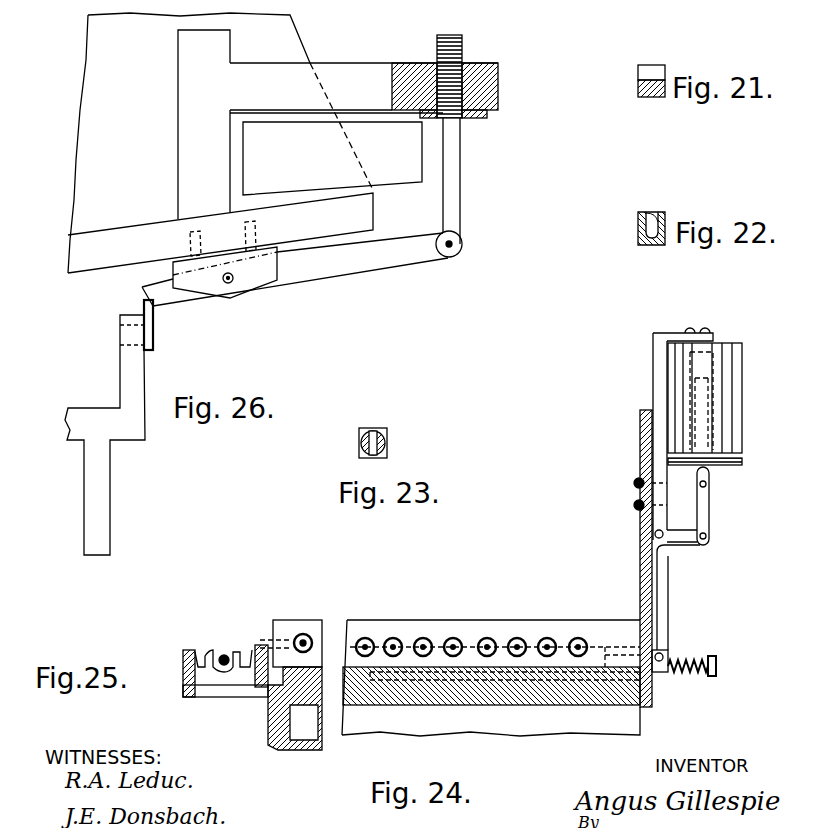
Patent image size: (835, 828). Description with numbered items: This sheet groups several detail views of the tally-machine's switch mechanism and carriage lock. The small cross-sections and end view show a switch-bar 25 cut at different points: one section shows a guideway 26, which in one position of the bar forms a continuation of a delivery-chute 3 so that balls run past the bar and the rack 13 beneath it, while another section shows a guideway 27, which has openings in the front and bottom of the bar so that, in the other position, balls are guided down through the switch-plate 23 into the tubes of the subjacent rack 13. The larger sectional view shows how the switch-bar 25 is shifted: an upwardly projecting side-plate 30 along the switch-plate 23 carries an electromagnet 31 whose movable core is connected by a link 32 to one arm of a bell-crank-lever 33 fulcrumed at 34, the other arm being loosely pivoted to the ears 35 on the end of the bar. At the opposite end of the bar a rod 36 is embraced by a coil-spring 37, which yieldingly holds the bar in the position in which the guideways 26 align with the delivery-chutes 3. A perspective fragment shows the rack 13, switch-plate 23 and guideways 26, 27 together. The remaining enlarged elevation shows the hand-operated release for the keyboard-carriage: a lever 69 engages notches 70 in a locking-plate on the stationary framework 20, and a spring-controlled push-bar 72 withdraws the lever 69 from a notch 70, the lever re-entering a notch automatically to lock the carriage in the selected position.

In FIG. 24, the delivery-chute 3 is at (424, 638).
In FIG. 24, the rack 13 is at (630, 723).
In FIG. 25, the rack 13 is at (298, 748).
In FIG. 26, the stationary framework 20 is at (110, 503).
In FIG. 26, the switch-plate 23 is at (105, 262).
In FIG. 24, the switch-plate 23 is at (425, 695).
In FIG. 25, the switch-plate 23 is at (268, 716).
In FIG. 21, the switch-bar 25 is at (653, 98).
In FIG. 22, the switch-bar 25 is at (652, 212).
In FIG. 23, the switch-bar 25 is at (388, 451).
In FIG. 21, the guideway 26 is at (650, 73).
In FIG. 25, the guideway 26 is at (243, 650).
In FIG. 22, the guideway 27 is at (640, 226).
In FIG. 25, the guideway 27 is at (232, 692).
In FIG. 26, the side-plate 30 is at (92, 60).
In FIG. 24, the side-plate 30 is at (623, 558).
In FIG. 24, the electromagnet 31 is at (733, 406).
In FIG. 24, the link 32 is at (706, 505).
In FIG. 24, the bell-crank-lever 33 is at (658, 585).
In FIG. 24, the fulcrum 34 is at (655, 535).
In FIG. 23, the ears 35 is at (380, 437).
In FIG. 24, the ears 35 is at (668, 652).
In FIG. 24, the rod 36 is at (690, 663).
In FIG. 24, the coil-spring 37 is at (703, 676).
In FIG. 26, the lever 69 is at (403, 262).
In FIG. 26, the notch 70 is at (152, 306).
In FIG. 26, the spring-controlled push-bar 72 is at (460, 165).